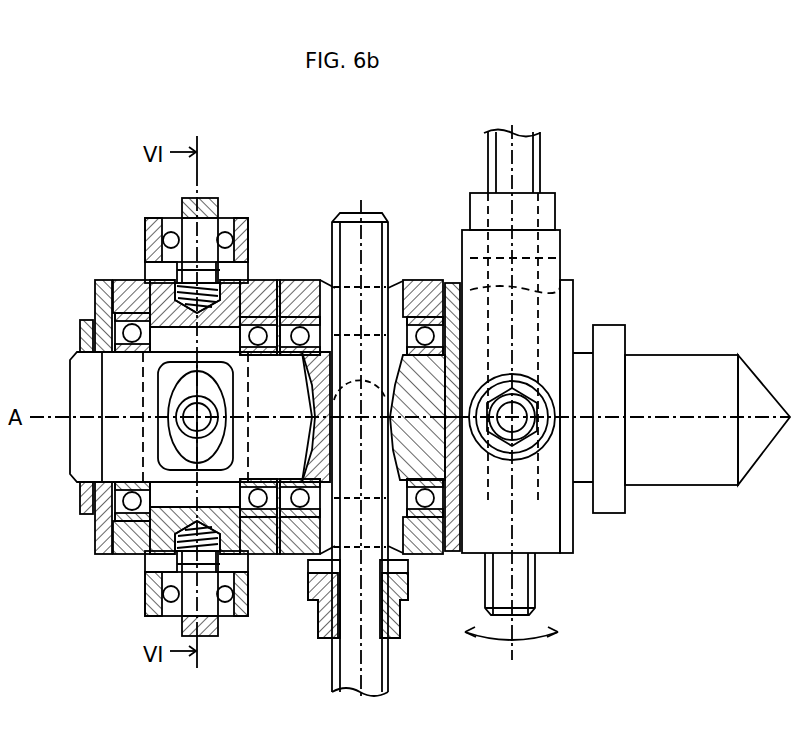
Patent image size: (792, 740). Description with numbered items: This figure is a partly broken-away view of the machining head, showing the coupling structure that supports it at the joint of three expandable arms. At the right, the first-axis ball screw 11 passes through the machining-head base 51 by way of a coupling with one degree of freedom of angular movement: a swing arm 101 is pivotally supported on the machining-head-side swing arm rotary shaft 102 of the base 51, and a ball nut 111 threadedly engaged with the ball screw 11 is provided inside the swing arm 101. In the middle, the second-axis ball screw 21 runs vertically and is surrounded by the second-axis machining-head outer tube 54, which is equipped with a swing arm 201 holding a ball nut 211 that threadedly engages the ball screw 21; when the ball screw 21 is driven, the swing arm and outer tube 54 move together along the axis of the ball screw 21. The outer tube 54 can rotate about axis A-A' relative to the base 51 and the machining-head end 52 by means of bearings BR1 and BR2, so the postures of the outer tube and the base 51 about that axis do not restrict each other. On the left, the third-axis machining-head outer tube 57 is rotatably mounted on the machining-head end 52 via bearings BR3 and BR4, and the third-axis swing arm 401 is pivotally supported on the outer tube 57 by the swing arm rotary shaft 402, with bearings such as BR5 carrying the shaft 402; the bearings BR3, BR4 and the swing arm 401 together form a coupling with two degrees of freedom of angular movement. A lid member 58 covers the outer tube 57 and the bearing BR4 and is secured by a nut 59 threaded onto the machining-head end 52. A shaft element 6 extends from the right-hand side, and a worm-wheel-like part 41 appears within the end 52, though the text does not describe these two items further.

The output shaft 6 is at (687, 463).
The first-axis ball screw 11 is at (523, 172).
The second-axis ball screw 21 is at (348, 655).
The worm wheel 41 is at (210, 410).
The machining-head base 51 is at (440, 452).
The machining-head end 52 is at (115, 440).
The second-axis machining-head outer tube 54 is at (427, 553).
The third-axis machining-head outer tube 57 is at (150, 522).
The lid member 58 is at (96, 282).
The nut 59 is at (80, 325).
The swing arm 101 is at (542, 258).
The machining-head-side swing arm rotary shaft 102 is at (530, 397).
The ball nut 111 is at (538, 218).
The swing arm 201 is at (308, 590).
The ball nut 211 is at (383, 607).
The machining-head-side swing arm 401 is at (153, 556).
The swing arm rotary shaft 402 is at (203, 202).
The bearing BR1 is at (433, 280).
The bearing BR2 is at (291, 280).
The bearing BR3 is at (266, 280).
The bearing BR4 is at (130, 282).
The bearing BR5 is at (163, 218).